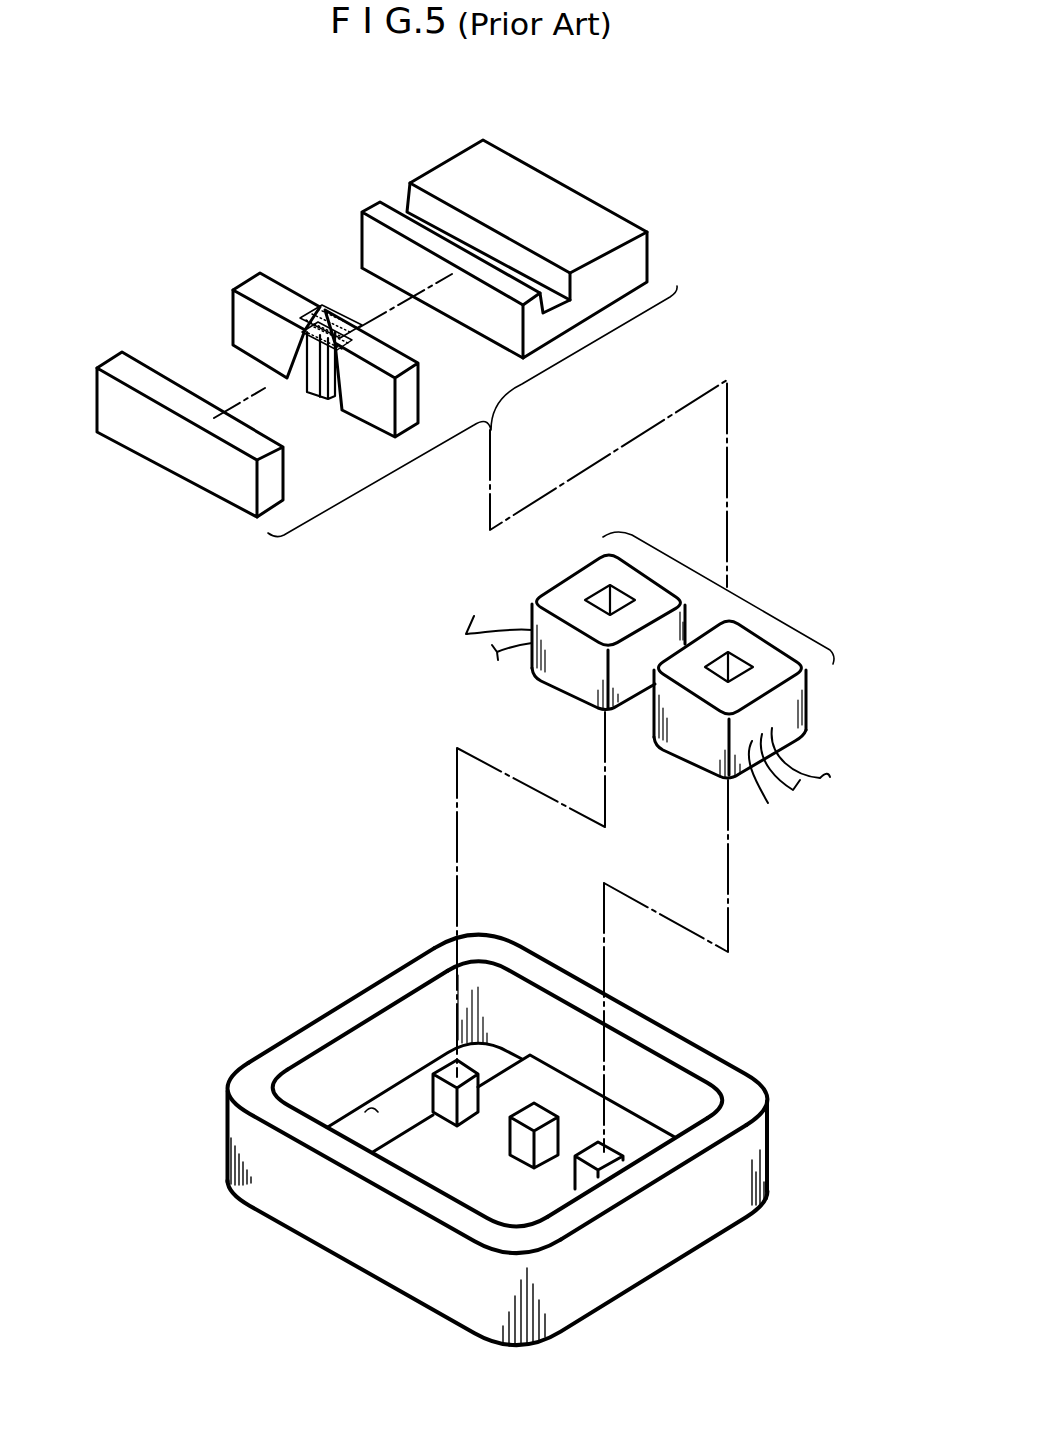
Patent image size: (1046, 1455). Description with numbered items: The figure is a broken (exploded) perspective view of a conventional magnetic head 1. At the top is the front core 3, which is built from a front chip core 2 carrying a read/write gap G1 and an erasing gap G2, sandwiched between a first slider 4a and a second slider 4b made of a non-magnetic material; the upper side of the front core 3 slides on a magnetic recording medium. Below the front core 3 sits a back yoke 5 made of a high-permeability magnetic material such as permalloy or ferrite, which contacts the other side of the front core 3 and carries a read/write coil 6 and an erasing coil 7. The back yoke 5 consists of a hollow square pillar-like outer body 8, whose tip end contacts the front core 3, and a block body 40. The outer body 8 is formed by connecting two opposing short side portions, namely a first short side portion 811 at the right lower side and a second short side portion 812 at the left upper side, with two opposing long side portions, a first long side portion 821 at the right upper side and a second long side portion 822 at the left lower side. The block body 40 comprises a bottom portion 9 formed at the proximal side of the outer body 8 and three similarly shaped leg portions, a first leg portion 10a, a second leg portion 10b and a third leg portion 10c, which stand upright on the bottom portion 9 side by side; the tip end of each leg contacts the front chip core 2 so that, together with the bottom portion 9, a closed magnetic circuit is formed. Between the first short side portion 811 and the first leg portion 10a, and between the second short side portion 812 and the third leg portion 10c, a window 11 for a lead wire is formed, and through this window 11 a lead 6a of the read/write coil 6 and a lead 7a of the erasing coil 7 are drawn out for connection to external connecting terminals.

The magnetic head 1 is at (717, 226).
The front chip core 2 is at (283, 290).
The front core 3 is at (470, 430).
The first slider 4a is at (608, 183).
The second slider 4b is at (165, 440).
The read/write gap G1 is at (327, 288).
The erasing gap G2 is at (320, 310).
The back yoke 5 is at (491, 1035).
The read/write coil 6 is at (778, 710).
The lead of the read/write coil 6a is at (826, 778).
The erasing coil 7 is at (573, 583).
The lead of the erasing coil 7a is at (472, 634).
The outer body 8 is at (500, 1099).
The first short side portion 811 is at (641, 1174).
The second short side portion 812 is at (355, 1012).
The first long side portion 821 is at (605, 1027).
The second long side portion 822 is at (389, 1160).
The bottom portion 9 is at (637, 1144).
The first leg portion 10a is at (591, 1174).
The second leg portion 10b is at (524, 1153).
The third leg portion 10c is at (436, 1095).
The window for a lead wire 11 is at (365, 1112).
The block body 40 is at (297, 929).